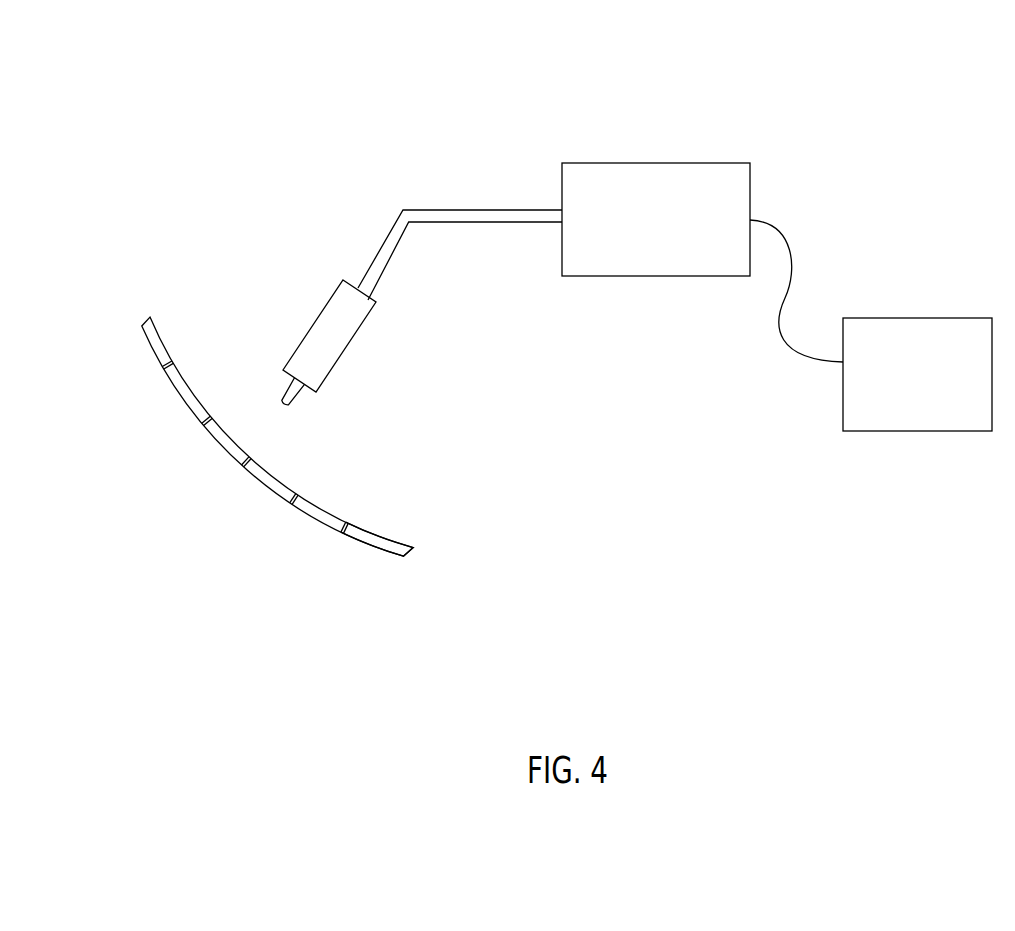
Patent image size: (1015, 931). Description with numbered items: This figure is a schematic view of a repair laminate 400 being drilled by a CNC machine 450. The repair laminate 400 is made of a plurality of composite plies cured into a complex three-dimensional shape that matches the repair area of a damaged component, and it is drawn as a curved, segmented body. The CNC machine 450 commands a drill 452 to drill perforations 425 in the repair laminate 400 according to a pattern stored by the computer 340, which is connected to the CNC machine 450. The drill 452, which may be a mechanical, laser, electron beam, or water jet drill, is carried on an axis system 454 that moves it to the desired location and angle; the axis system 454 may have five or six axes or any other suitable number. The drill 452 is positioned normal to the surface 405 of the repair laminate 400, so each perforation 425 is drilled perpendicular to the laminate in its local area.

The repair laminate 400 is at (162, 503).
The surface 405 is at (190, 390).
The perforations 425 is at (343, 537).
The drill 452 is at (340, 353).
The axis system 454 is at (455, 210).
The CNC machine 450 is at (660, 163).
The computer 340 is at (932, 317).